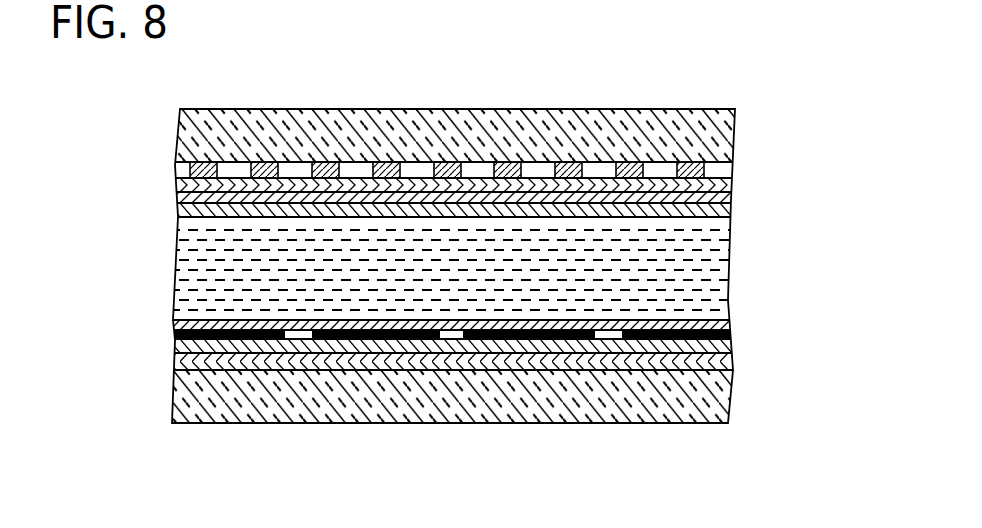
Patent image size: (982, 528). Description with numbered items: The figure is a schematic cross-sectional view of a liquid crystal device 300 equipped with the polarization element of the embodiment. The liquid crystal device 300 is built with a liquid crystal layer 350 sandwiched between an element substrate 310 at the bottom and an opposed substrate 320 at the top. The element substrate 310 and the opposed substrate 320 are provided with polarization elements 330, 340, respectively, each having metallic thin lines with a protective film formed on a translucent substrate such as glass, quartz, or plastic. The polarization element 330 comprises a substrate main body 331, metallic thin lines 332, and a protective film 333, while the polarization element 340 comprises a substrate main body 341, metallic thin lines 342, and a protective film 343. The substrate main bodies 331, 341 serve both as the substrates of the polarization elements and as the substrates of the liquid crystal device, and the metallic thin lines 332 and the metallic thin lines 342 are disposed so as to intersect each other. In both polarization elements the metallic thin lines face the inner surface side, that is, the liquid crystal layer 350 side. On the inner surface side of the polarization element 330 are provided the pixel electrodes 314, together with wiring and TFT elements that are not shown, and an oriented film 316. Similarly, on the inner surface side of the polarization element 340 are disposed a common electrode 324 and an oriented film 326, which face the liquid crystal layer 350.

The liquid crystal device 300 is at (709, 106).
The element substrate 310 is at (168, 320).
The pixel electrodes 314 is at (219, 333).
The oriented film 316 is at (728, 327).
The opposed substrate 320 is at (168, 110).
The common electrode 324 is at (731, 197).
The oriented film 326 is at (731, 212).
The polarization element 330 is at (805, 323).
The substrate main body 331 is at (723, 397).
The metallic thin lines 332 is at (723, 362).
The protective film 333 is at (729, 344).
The polarization element 340 is at (820, 110).
The substrate main body 341 is at (732, 133).
The metallic thin lines 342 is at (707, 172).
The protective film 343 is at (724, 187).
The liquid crystal layer 350 is at (723, 265).